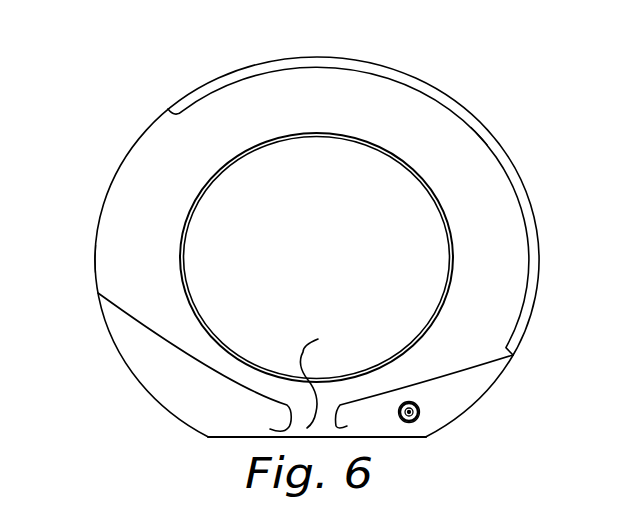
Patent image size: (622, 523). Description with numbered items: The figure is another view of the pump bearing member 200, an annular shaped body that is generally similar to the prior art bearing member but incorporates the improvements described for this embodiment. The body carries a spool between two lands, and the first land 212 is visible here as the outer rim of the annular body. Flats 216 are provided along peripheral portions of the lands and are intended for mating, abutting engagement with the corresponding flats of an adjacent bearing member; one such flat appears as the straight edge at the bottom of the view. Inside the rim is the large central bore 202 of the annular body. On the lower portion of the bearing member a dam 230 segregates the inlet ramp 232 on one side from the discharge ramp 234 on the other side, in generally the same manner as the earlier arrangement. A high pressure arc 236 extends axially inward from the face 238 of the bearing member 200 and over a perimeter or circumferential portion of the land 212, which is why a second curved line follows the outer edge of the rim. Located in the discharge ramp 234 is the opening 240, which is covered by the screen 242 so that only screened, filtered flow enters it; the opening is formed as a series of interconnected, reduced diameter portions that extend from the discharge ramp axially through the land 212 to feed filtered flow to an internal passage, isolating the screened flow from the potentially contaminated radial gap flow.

The pump bearing member 200 is at (124, 117).
The central opening 202 is at (207, 195).
The first land 212 is at (95, 262).
The flats 216 is at (222, 437).
The dam 230 is at (318, 339).
The inlet ramp 232 is at (170, 376).
The discharge ramp 234 is at (467, 374).
The high pressure arc 236 is at (462, 104).
The face 238 is at (473, 170).
The opening 240 is at (415, 421).
The screen 242 is at (422, 412).